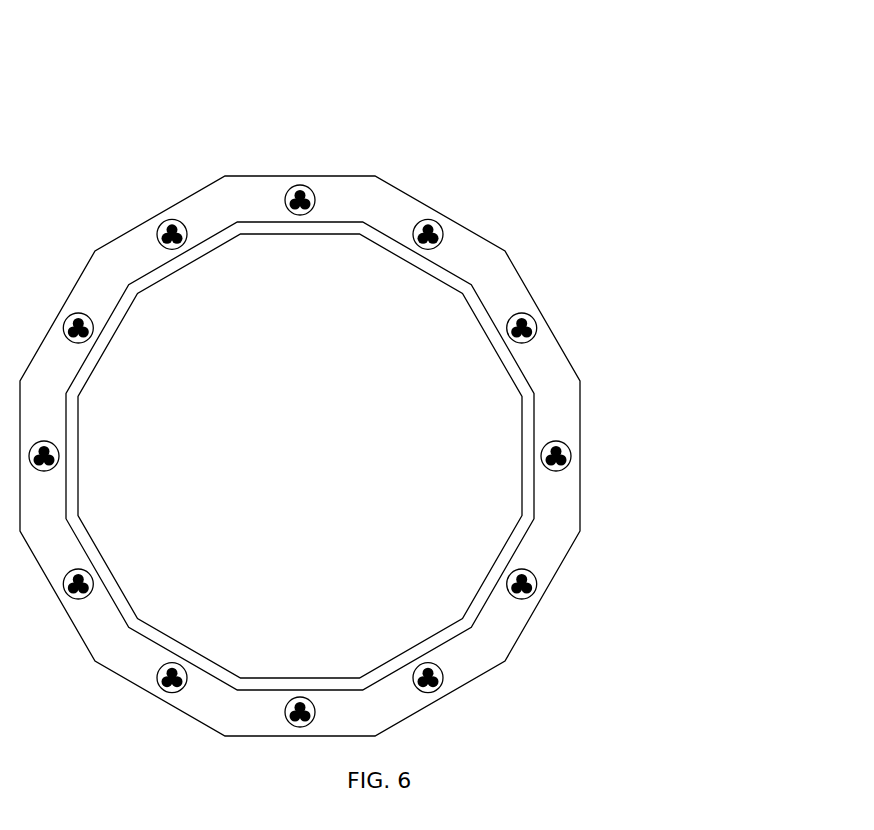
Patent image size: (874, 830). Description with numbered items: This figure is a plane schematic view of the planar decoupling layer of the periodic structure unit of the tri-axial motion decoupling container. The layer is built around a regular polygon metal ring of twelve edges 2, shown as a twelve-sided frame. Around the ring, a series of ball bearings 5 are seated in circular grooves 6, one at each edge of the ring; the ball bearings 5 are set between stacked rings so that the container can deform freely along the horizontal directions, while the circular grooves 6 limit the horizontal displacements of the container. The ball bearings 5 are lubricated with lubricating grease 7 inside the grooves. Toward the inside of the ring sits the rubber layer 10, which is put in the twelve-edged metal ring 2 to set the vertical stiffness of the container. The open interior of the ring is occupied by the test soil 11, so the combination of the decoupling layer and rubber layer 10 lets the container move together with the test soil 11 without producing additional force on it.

The regular polygon metal ring of twelve edges 2 is at (565, 407).
The ball bearings 5 is at (537, 586).
The circular grooves 6 is at (571, 457).
The lubricating grease 7 is at (490, 332).
The rubber layers 10 is at (522, 397).
The test soil 11 is at (323, 277).